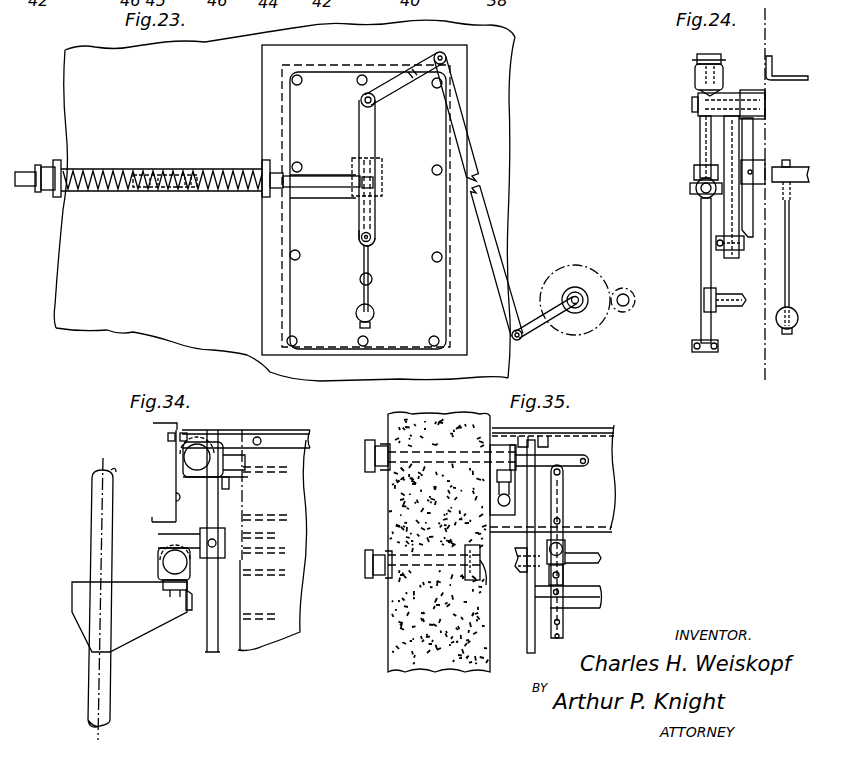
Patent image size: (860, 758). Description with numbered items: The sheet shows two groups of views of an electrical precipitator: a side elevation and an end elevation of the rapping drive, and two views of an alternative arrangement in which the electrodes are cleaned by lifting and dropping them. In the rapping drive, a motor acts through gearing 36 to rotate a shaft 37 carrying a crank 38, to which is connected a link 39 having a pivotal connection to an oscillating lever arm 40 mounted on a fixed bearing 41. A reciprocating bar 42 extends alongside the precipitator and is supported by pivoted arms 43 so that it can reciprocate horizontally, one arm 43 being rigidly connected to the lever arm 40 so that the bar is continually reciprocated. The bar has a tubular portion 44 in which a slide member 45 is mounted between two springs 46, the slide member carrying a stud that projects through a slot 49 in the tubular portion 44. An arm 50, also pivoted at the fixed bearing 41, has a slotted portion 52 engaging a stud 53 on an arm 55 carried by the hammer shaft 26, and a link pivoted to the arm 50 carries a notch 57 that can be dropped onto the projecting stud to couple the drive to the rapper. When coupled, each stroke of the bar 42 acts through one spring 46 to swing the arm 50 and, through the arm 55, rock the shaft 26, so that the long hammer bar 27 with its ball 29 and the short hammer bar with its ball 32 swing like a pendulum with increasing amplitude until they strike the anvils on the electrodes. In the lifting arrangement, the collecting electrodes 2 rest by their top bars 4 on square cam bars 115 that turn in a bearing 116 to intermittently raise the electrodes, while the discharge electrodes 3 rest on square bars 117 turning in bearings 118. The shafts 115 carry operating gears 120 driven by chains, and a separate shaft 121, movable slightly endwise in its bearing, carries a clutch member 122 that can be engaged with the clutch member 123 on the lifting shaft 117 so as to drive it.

In FIG. 23, the hammer shaft 26 is at (380, 162).
In FIG. 24, the hammer shaft 26 is at (802, 167).
In FIG. 23, the long hammer bar 27 is at (361, 299).
In FIG. 24, the long hammer bar 27 is at (785, 290).
In FIG. 23, the ball 29 is at (375, 314).
In FIG. 24, the ball 29 is at (784, 329).
In FIG. 23, the ball 32 is at (373, 280).
In FIG. 23, the gearing 36 is at (612, 276).
In FIG. 23, the shaft 37 is at (571, 293).
In FIG. 24, the shaft 37 is at (727, 306).
In FIG. 23, the crank 38 is at (535, 331).
In FIG. 23, the link 39 is at (486, 216).
In FIG. 24, the link 39 is at (702, 262).
In FIG. 23, the oscillating lever arm 40 is at (395, 88).
In FIG. 24, the oscillating lever arm 40 is at (698, 90).
In FIG. 23, the fixed bearing 41 is at (361, 101).
In FIG. 24, the fixed bearing 41 is at (733, 100).
In FIG. 23, the reciprocating bar 42 is at (311, 187).
In FIG. 24, the reciprocating bar 42 is at (694, 196).
In FIG. 23, the pivoted arm 43 is at (360, 141).
In FIG. 24, the pivoted arm 43 is at (697, 152).
In FIG. 23, the tubular portion 44 is at (122, 195).
In FIG. 23, the slide member 45 is at (168, 176).
In FIG. 23, the spring 46 is at (122, 170).
In FIG. 23, the slot 49 is at (190, 176).
In FIG. 23, the arm 50 is at (352, 238).
In FIG. 24, the arm 50 is at (738, 142).
In FIG. 23, the slotted portion 52 is at (376, 214).
In FIG. 23, the stud 53 is at (372, 238).
In FIG. 24, the stud 53 is at (718, 250).
In FIG. 24, the arm 55 is at (751, 205).
In FIG. 23, the notch 57 is at (163, 194).
In FIG. 34, the collecting electrode 2 is at (292, 490).
In FIG. 35, the collecting electrode 2 is at (527, 640).
In FIG. 34, the discharge electrode 3 is at (200, 634).
In FIG. 35, the discharge electrode 3 is at (566, 632).
In FIG. 34, the top bar 4 is at (222, 438).
In FIG. 35, the top bar 4 is at (540, 443).
In FIG. 34, the cam bar 115 is at (184, 456).
In FIG. 35, the bearing 116 is at (490, 416).
In FIG. 34, the cam bar 117 is at (163, 564).
In FIG. 35, the cam bar 117 is at (600, 561).
In FIG. 34, the bearing 118 is at (160, 590).
In FIG. 35, the operating gear 120 is at (370, 446).
In FIG. 35, the shaft 121 is at (372, 582).
In FIG. 35, the clutch member 122 is at (480, 585).
In FIG. 35, the clutch member 123 is at (516, 562).